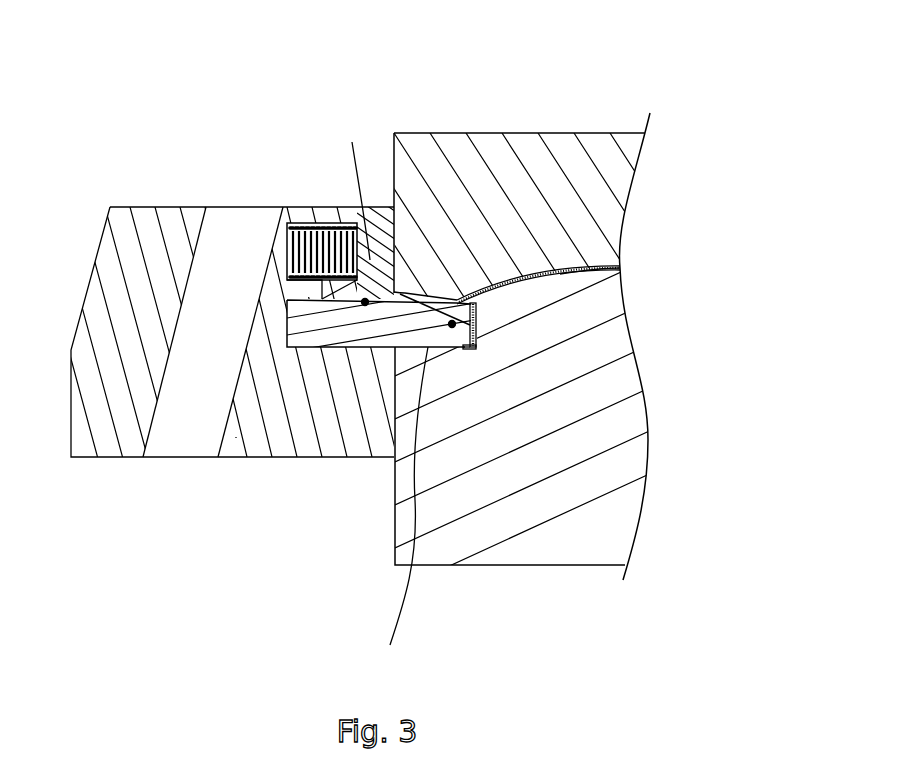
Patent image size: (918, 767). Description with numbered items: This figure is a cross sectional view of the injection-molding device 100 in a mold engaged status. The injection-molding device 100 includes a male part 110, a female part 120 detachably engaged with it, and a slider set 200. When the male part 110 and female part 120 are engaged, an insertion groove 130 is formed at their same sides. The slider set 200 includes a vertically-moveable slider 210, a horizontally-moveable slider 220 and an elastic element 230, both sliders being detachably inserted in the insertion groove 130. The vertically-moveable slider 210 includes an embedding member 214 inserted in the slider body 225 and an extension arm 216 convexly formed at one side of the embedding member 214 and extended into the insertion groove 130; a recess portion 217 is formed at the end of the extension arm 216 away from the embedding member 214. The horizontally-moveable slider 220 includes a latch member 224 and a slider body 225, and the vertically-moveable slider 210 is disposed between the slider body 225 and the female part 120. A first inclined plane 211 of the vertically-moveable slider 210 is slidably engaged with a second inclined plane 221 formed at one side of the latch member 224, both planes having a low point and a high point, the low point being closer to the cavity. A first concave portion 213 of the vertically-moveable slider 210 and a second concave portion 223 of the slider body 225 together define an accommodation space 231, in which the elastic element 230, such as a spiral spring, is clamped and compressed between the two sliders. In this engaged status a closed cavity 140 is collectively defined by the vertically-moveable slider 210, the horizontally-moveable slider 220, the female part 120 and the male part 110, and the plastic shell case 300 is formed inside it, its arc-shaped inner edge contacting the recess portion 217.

The injection-molding device 100 is at (74, 25).
The male part 110 is at (577, 440).
The female part 120 is at (515, 185).
The insertion groove 130 is at (436, 292).
The closed cavity 140 is at (601, 260).
The slider set 200 is at (302, 613).
The vertically-moveable slider 210 is at (322, 567).
The first inclined plane 211 is at (365, 302).
The first concave portion 213 is at (326, 215).
The embedding member 214 is at (452, 327).
The extension arm 216 is at (486, 295).
The recess portion 217 is at (479, 337).
The horizontally-moveable slider 220 is at (215, 567).
The second inclined plane 221 is at (463, 338).
The second concave portion 223 is at (285, 220).
The latch member 224 is at (303, 290).
The slider body 225 is at (236, 438).
The elastic element 230 is at (290, 255).
The accommodation space 231 is at (348, 87).
The plastic shell case 300 is at (567, 274).